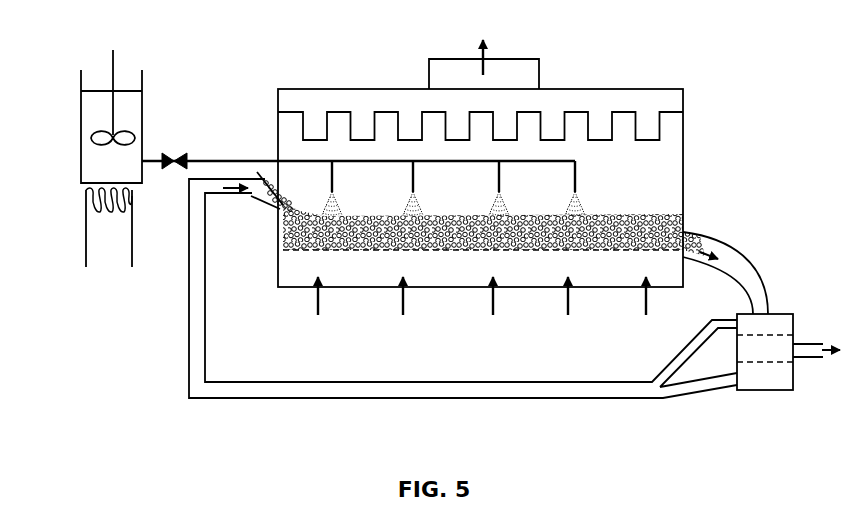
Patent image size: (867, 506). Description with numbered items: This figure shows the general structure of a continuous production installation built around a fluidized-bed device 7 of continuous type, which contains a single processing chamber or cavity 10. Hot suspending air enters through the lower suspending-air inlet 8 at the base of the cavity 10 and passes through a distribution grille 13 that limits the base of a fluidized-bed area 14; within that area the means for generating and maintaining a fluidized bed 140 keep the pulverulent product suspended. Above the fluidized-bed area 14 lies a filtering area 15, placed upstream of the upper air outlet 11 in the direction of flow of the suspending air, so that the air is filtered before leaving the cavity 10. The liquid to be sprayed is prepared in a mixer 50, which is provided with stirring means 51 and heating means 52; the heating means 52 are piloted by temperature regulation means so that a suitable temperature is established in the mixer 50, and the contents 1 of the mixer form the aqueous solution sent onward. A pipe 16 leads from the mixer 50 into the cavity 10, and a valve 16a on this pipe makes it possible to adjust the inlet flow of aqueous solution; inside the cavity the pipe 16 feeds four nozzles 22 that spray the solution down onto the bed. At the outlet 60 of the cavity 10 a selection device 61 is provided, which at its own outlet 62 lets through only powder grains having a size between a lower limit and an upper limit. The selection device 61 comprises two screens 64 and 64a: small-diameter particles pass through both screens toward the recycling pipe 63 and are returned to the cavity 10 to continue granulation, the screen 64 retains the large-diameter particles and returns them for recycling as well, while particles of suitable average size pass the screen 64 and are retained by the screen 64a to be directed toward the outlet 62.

The coating liquid 1 is at (98, 160).
The fluidized-bed device 7 is at (477, 157).
The suspending-air inlet 8 is at (494, 306).
The cavity 10 is at (298, 88).
The upper air outlet 11 is at (512, 65).
The distribution grille 13 is at (462, 251).
The fluidized-bed area 14 is at (660, 215).
The filtering area 15 is at (648, 141).
The pipe 16 is at (262, 160).
The valve 16a is at (175, 156).
The nozzles 22 is at (333, 185).
The mixer 50 is at (81, 113).
The stirring means 51 is at (113, 67).
The heating means 52 is at (86, 208).
The outlet 60 is at (685, 237).
The selection device 61 is at (778, 314).
The outlet 62 is at (812, 350).
The recycling pipe 63 is at (637, 392).
The screen 64 is at (782, 333).
The screen 64a is at (757, 363).
The fluidized bed 140 is at (296, 231).